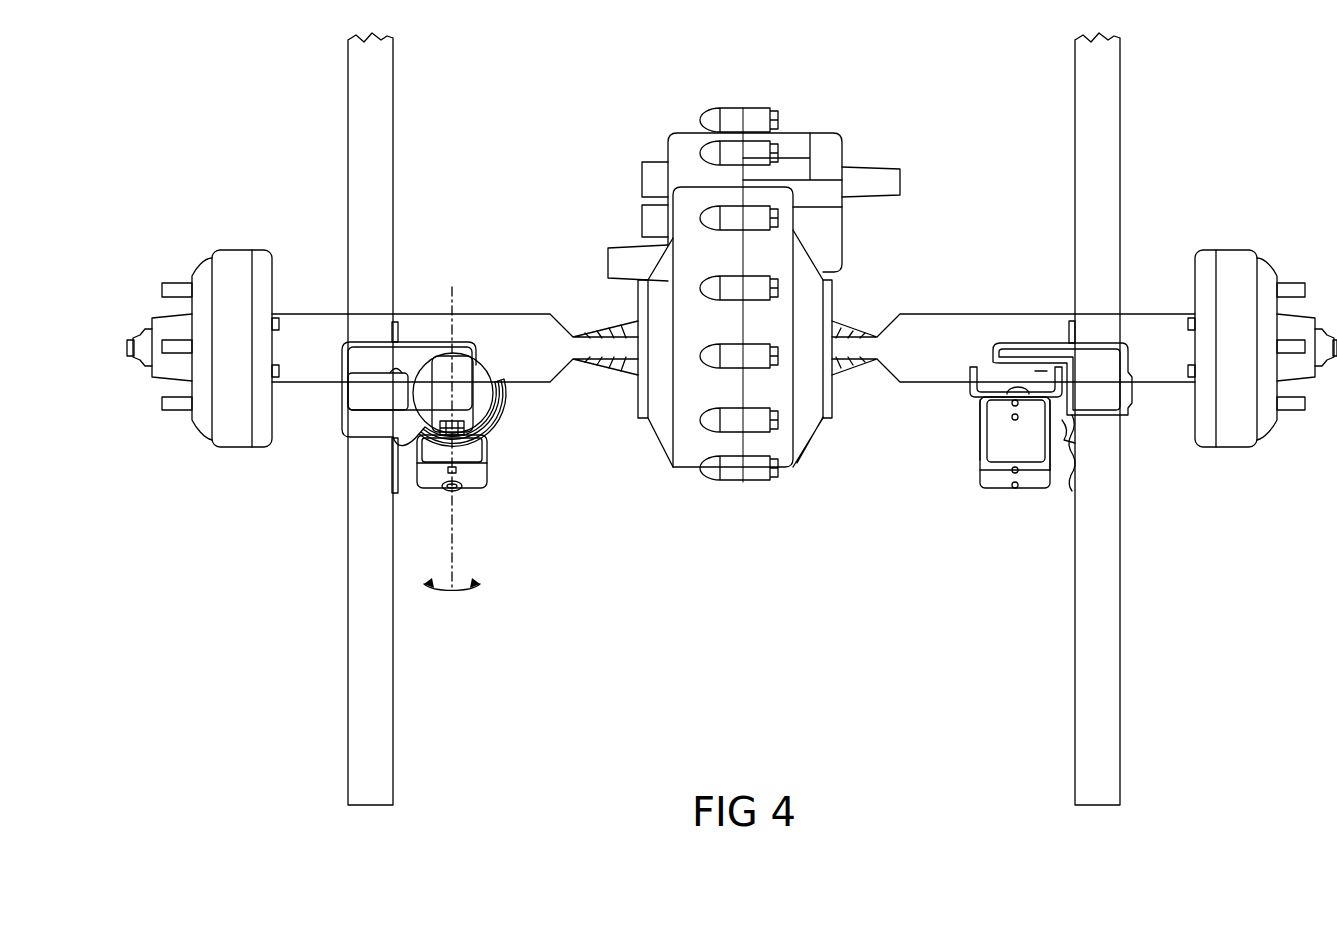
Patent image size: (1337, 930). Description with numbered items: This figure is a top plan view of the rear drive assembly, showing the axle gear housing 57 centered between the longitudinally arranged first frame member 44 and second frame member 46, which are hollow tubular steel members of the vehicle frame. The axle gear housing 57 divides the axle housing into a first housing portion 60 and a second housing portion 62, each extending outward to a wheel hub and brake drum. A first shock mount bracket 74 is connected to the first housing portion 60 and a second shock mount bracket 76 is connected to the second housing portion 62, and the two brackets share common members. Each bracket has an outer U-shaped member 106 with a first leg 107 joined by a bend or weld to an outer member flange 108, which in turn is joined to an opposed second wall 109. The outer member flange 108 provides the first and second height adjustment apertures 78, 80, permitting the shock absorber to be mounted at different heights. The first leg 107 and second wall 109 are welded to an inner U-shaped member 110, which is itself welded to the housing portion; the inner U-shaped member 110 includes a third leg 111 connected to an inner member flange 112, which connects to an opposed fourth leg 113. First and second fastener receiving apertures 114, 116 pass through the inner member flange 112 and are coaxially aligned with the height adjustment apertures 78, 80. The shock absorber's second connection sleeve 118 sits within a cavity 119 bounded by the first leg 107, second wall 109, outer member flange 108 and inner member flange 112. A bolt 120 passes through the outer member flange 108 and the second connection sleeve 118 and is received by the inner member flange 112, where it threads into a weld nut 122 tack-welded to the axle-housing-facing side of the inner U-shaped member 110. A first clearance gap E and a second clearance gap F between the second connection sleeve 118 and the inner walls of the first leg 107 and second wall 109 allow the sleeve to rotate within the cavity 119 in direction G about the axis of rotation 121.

The first frame member 44 is at (1088, 186).
The second frame member 46 is at (382, 195).
The axle gear housing 57 is at (793, 145).
The first housing portion 60 is at (935, 327).
The second housing portion 62 is at (540, 315).
The first shock mount bracket 74 is at (925, 515).
The second shock mount bracket 76 is at (510, 428).
The first height adjustment aperture 78 is at (1017, 489).
The second height adjustment aperture 80 is at (1015, 473).
The outer U-shaped member 106 is at (1000, 530).
The first leg 107 is at (1050, 463).
The outer member flange 108 is at (433, 484).
The second wall 109 is at (980, 450).
The inner U-shaped member 110 is at (1048, 365).
The third leg 111 is at (1057, 385).
The inner member flange 112 is at (992, 408).
The fourth leg 113 is at (973, 385).
The first fastener receiving aperture 114 is at (991, 440).
The second fastener receiving aperture 116 is at (1013, 406).
The second connection sleeve 118 is at (477, 463).
The cavity 119 is at (1067, 440).
The bolt 120 is at (462, 490).
The axis of rotation 121 is at (453, 548).
The weld nut 122 is at (1013, 387).
The first clearance gap E is at (405, 457).
The second clearance gap F is at (505, 452).
The direction of rotation G is at (473, 597).